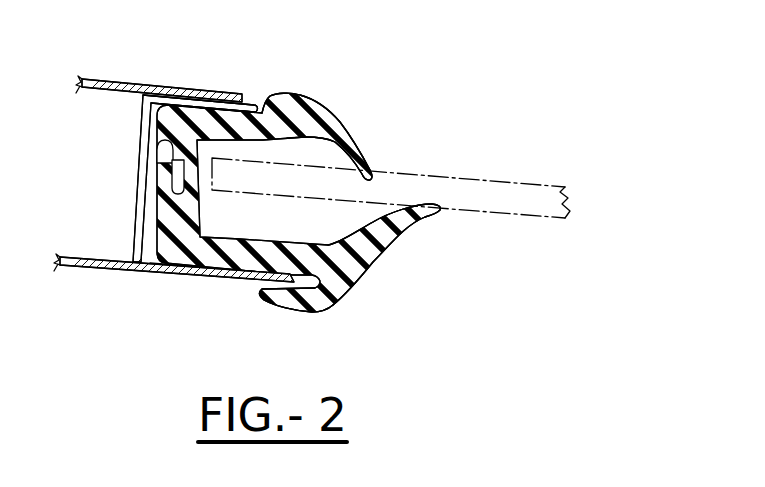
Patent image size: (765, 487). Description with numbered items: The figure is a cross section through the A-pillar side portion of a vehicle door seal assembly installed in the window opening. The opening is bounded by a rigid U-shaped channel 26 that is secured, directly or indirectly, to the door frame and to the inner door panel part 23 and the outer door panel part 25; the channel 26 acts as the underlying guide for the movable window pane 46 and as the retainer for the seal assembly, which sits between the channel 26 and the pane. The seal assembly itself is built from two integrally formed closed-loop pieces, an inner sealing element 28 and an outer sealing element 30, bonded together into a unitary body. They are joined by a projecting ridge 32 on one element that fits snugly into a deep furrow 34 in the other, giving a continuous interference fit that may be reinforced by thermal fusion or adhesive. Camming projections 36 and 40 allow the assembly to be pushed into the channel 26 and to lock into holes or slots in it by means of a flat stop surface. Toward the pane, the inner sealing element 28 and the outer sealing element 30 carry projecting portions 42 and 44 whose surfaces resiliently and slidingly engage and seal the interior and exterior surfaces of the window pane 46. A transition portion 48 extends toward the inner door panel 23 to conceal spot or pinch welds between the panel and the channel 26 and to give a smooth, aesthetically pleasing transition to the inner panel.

The inner door panel part 23 is at (87, 266).
The outer door panel part 25 is at (110, 80).
The U-shaped channel 26 is at (137, 218).
The inner sealing element 28 is at (321, 260).
The outer sealing element 30 is at (217, 104).
The projecting ridge 32 is at (157, 157).
The furrow 34 is at (171, 187).
The camming projection 36 is at (188, 101).
The camming projection 40 is at (173, 266).
The projecting portion 42 is at (407, 224).
The projecting portion 44 is at (369, 158).
The window pane 46 is at (511, 205).
The transition portion 48 is at (273, 303).